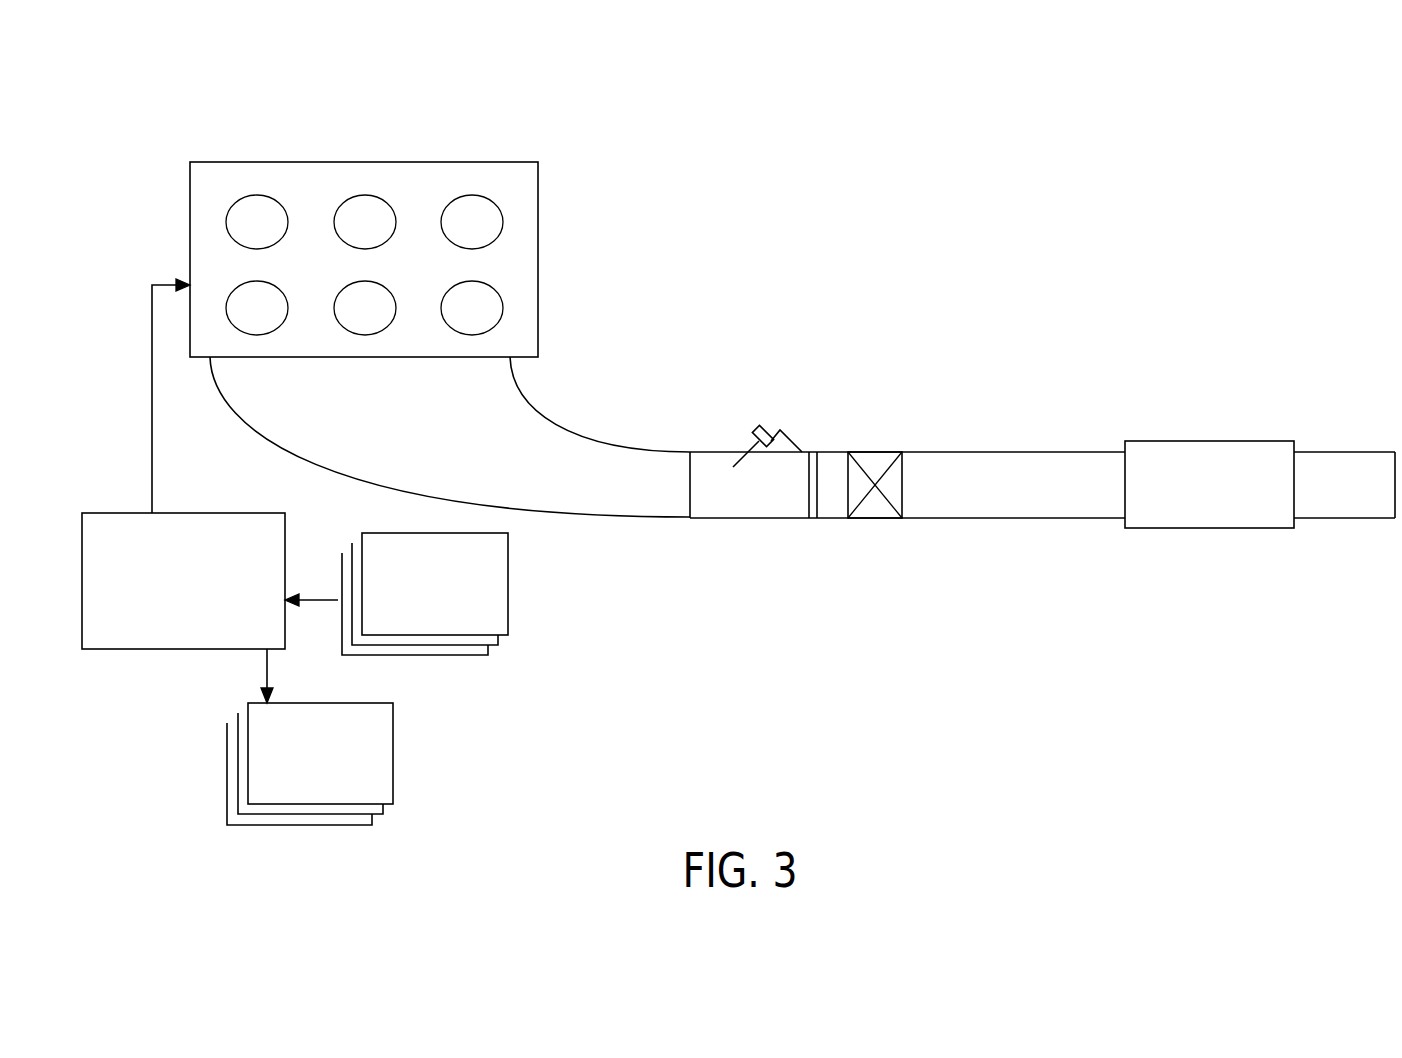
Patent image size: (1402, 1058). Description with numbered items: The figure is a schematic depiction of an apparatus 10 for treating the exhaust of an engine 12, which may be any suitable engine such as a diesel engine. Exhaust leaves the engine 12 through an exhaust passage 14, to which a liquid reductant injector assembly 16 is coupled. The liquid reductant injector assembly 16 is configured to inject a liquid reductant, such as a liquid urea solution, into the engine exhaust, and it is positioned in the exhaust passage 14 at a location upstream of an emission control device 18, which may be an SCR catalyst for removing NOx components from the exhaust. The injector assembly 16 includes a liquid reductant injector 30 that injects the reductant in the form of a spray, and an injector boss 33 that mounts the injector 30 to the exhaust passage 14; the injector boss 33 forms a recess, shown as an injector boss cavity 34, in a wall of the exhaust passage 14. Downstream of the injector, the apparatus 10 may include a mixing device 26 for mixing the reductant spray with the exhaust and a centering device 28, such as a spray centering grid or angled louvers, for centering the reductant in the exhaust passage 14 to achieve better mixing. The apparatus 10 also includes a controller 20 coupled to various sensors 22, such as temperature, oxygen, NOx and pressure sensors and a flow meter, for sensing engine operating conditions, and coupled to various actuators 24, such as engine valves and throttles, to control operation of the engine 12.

The apparatus 10 is at (1255, 149).
The engine 12 is at (363, 162).
The exhaust passage 14 is at (567, 487).
The liquid reductant injector assembly 16 is at (765, 336).
The emission control device 18 is at (1230, 450).
The controller 20 is at (196, 512).
The sensors 22 is at (508, 592).
The actuators 24 is at (395, 758).
The mixing device 26 is at (885, 460).
The centering device 28 is at (813, 522).
The liquid reductant injector 30 is at (761, 424).
The injector boss 33 is at (793, 442).
The injector boss cavity 34 is at (773, 455).